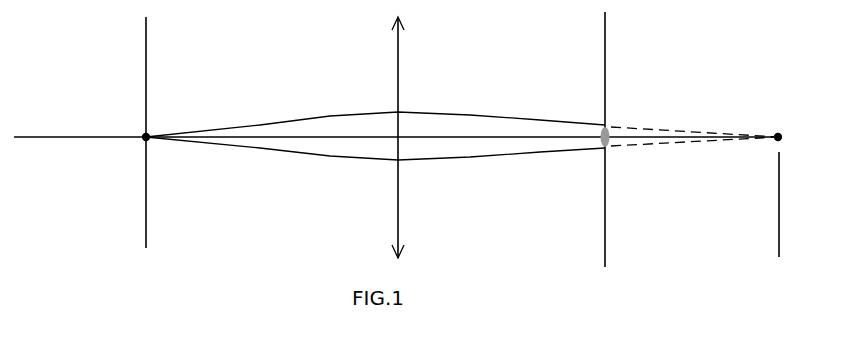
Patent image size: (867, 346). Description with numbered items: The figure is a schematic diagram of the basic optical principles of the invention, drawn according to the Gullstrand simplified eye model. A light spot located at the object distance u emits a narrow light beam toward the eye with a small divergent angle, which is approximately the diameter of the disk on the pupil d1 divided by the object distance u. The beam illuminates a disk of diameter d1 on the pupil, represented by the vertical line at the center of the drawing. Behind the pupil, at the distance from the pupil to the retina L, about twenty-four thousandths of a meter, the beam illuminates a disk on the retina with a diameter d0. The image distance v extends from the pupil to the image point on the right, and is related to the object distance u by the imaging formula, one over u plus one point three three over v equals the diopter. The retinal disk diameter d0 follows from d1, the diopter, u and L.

The diameter of illuminated disk on the pupil d1 is at (404, 193).
The diameter of illuminated disk on the retina d0 is at (612, 175).
The distance from the pupil to the retina L is at (605, 49).
The object distance u is at (398, 217).
The image distance v is at (778, 208).